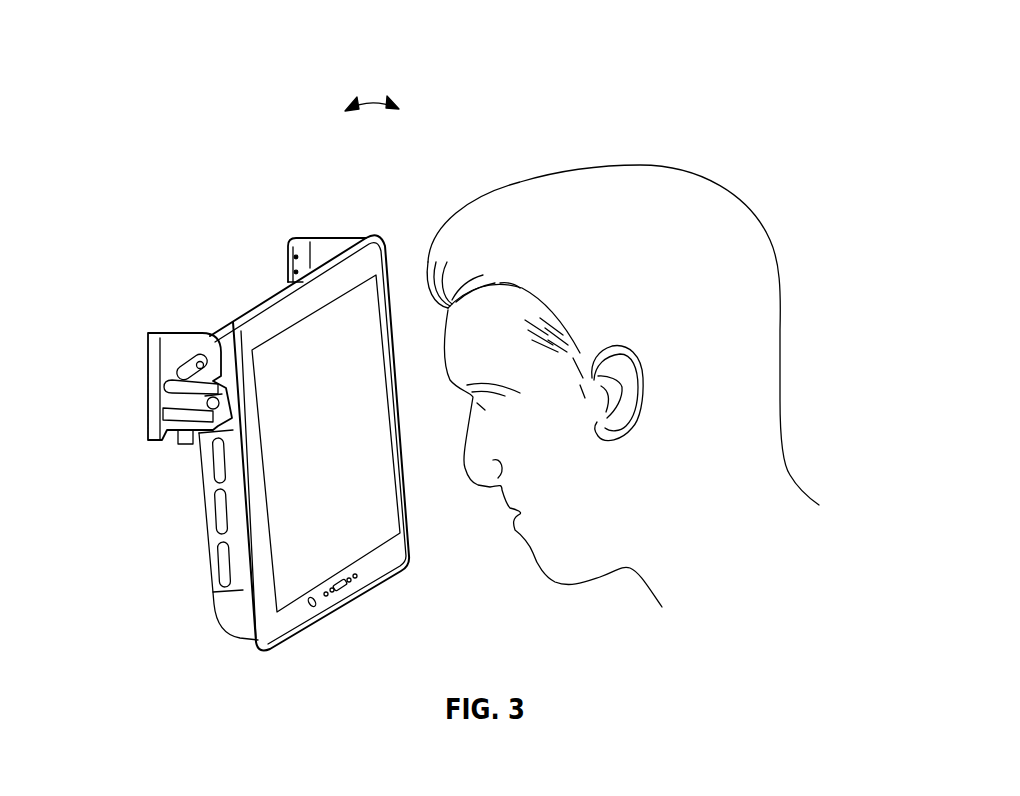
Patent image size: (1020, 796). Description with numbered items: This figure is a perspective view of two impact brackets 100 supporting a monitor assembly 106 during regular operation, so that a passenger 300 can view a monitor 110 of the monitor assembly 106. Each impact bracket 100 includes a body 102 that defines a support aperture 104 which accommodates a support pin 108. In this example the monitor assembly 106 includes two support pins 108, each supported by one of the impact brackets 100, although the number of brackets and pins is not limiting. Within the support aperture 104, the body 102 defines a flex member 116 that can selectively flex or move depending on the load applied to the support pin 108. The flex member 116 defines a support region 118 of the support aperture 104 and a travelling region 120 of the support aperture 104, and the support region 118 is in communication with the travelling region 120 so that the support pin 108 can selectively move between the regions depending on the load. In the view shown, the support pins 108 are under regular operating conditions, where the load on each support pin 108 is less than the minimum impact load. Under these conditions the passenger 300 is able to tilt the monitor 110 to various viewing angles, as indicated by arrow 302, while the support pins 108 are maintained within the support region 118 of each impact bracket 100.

The impact bracket 100 is at (303, 243).
The body 102 is at (330, 237).
The support aperture 104 is at (160, 378).
The monitor assembly 106 is at (380, 565).
The support pin 108 is at (205, 400).
The monitor 110 is at (367, 452).
The flex member 116 is at (213, 397).
The support region 118 is at (230, 405).
The travelling region 120 is at (183, 432).
The passenger 300 is at (623, 187).
The arrow 302 is at (365, 104).